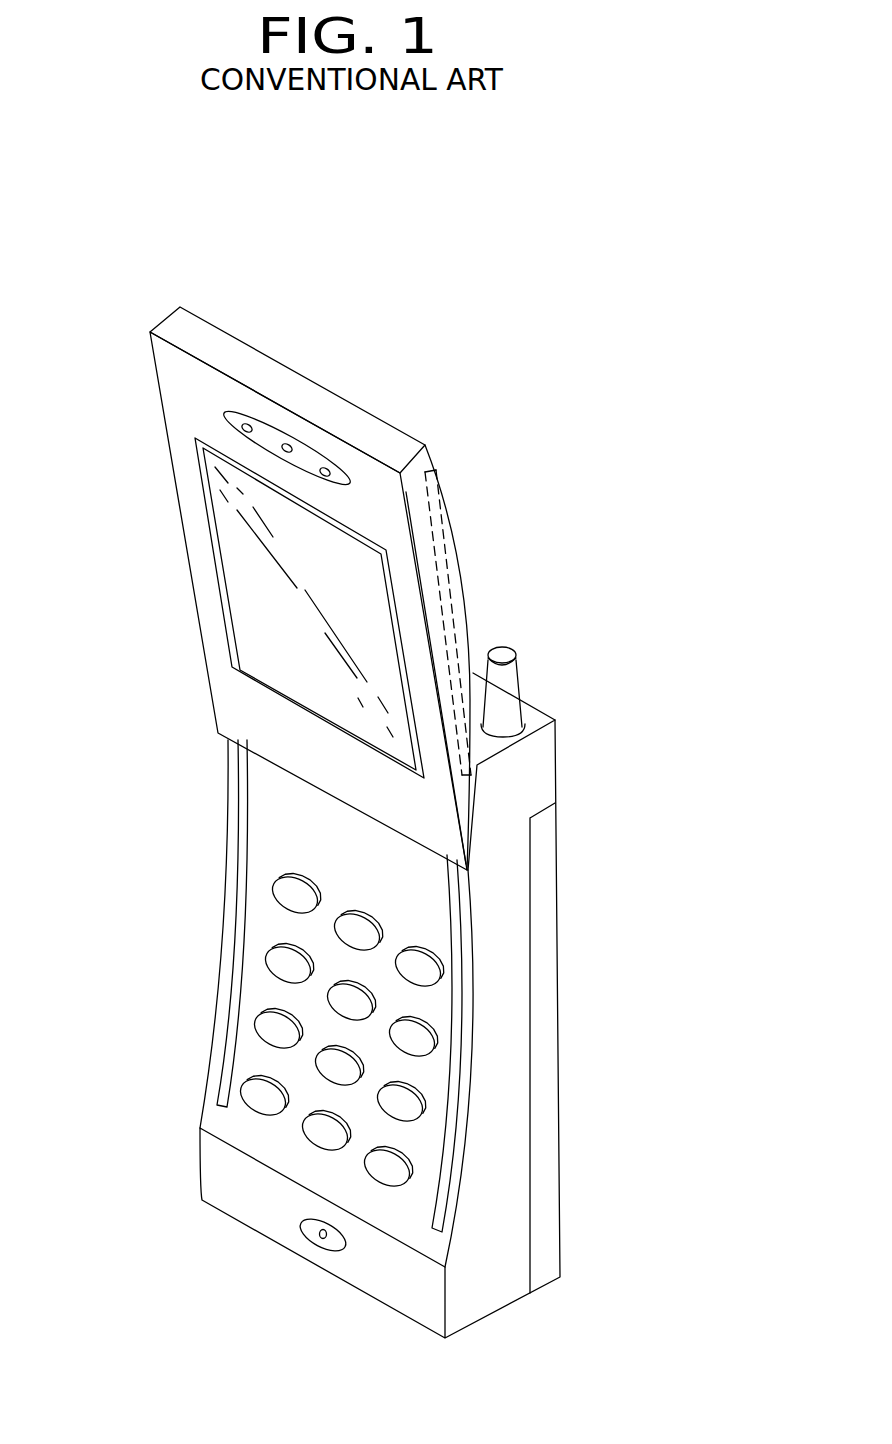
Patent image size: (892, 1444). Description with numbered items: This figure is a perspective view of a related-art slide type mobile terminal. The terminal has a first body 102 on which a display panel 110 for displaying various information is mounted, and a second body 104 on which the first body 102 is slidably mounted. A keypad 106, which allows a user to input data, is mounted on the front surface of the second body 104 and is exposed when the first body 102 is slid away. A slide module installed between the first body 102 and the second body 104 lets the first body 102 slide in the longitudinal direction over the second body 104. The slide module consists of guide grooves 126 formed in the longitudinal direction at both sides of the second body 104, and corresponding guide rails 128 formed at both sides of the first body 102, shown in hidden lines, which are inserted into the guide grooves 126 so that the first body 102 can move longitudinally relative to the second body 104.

The first body 102 is at (225, 702).
The second body 104 is at (503, 1008).
The keypad 106 is at (260, 1098).
The display panel 110 is at (235, 542).
The guide grooves 126 is at (240, 923).
The guide rails 128 is at (443, 547).